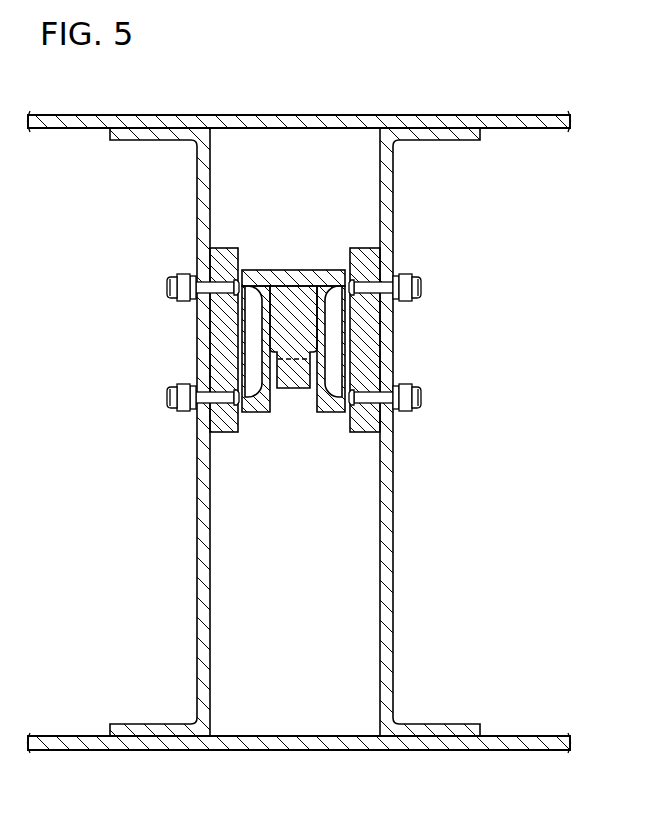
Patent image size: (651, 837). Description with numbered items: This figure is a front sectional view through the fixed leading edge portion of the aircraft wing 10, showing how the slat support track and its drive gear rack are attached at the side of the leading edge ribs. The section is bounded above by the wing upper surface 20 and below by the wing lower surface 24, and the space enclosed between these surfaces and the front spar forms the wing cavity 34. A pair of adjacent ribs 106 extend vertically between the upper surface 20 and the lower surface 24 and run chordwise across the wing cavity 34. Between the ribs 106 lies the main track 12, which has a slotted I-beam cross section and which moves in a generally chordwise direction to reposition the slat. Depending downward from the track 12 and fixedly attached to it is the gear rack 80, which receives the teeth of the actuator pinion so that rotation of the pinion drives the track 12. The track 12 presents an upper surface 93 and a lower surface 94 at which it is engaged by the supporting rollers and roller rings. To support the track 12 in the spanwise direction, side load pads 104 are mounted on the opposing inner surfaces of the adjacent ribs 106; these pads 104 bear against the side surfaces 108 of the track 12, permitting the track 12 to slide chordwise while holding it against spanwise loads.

The wing 10 is at (106, 111).
The upper surface 20 is at (186, 115).
The lower surface 24 is at (388, 751).
The wing cavity 34 is at (458, 161).
The ribs 106 is at (328, 400).
The side load pads 104 is at (214, 256).
The side surfaces 108 is at (236, 284).
The track 12 is at (299, 333).
The upper surface 93 is at (283, 270).
The gear rack 80 is at (297, 389).
The lower surface 94 is at (262, 413).